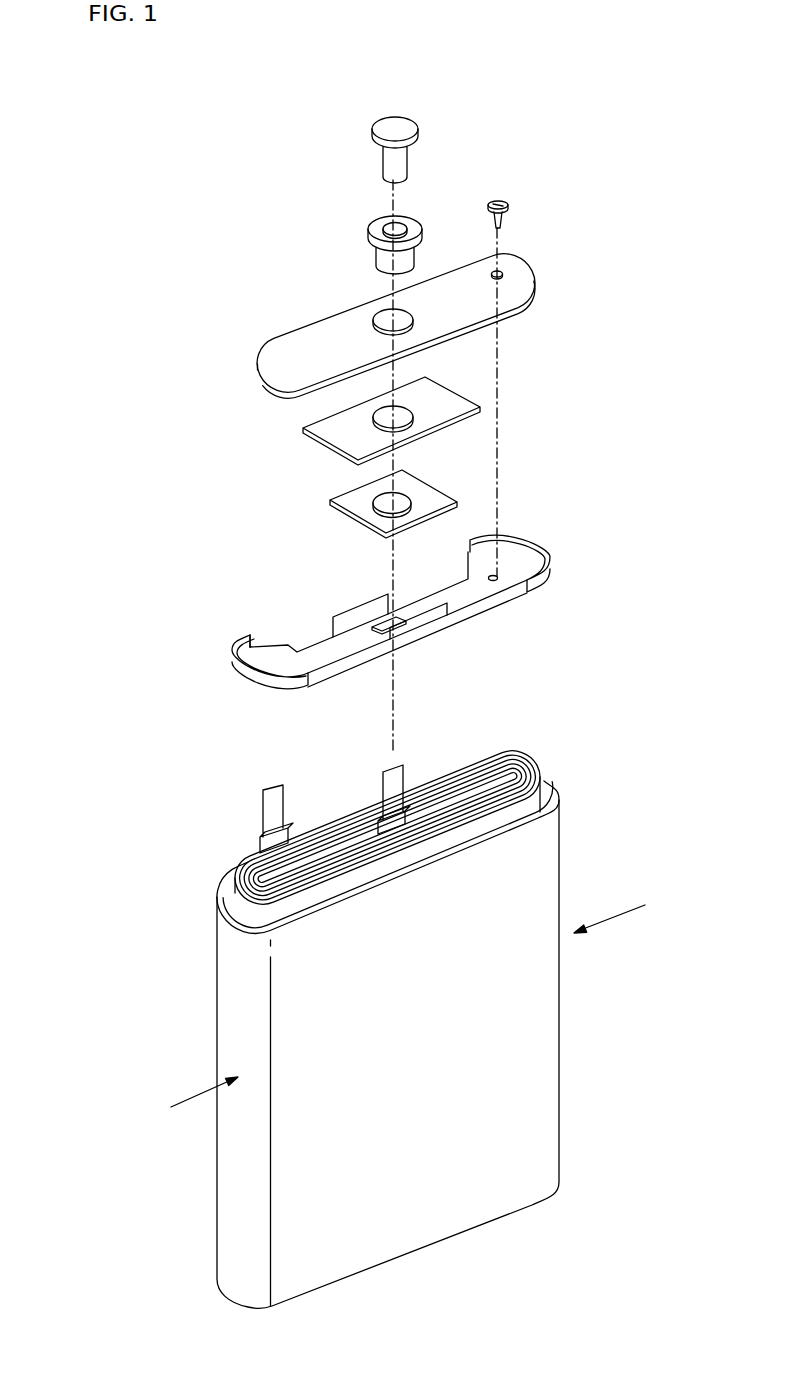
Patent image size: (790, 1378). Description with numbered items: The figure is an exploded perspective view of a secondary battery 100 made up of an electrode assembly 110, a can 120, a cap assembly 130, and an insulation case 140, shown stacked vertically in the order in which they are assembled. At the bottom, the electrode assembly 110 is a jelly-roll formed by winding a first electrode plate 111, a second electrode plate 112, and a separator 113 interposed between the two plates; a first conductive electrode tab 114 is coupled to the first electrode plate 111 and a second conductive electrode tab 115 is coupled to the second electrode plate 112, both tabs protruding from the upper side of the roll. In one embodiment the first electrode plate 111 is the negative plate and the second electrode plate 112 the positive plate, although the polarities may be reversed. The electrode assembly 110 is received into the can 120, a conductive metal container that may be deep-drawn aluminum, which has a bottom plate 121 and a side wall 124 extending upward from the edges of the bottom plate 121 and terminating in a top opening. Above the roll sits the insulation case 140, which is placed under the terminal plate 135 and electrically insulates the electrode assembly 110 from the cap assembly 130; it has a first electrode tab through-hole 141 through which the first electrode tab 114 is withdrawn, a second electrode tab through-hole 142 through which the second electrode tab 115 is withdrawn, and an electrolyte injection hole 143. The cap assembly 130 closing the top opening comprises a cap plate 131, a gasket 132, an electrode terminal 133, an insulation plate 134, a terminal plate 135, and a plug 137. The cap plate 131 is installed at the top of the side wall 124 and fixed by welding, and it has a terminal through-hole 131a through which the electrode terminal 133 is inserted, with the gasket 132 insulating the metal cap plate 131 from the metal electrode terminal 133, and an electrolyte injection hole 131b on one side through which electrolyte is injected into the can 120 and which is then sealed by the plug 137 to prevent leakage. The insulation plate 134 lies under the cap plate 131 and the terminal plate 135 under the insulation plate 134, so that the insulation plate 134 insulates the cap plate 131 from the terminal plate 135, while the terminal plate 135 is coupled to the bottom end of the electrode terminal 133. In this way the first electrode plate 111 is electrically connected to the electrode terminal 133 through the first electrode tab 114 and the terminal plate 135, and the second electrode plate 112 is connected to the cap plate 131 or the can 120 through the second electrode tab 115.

The secondary battery 100 is at (175, 103).
The electrode assembly 110 is at (605, 723).
The first electrode plate 111 is at (509, 770).
The second electrode plate 112 is at (538, 772).
The separator 113 is at (527, 769).
The first electrode tab 114 is at (392, 782).
The second electrode tab 115 is at (273, 812).
The can 120 is at (584, 988).
The bottom plate 121 is at (556, 1210).
The side wall 124 is at (543, 1086).
The cap assembly 130 is at (212, 362).
The cap plate 131 is at (483, 297).
The terminal through-hole 131a is at (407, 320).
The electrolyte injection hole 131b is at (503, 272).
The gasket 132 is at (380, 222).
The electrode terminal 133 is at (383, 123).
The insulation plate 134 is at (337, 437).
The terminal plate 135 is at (360, 505).
The plug 137 is at (505, 200).
The insulation case 140 is at (228, 616).
The first electrode tab through-hole 141 is at (381, 620).
The second electrode tab through-hole 142 is at (300, 631).
The electrolyte injection hole 143 is at (496, 575).